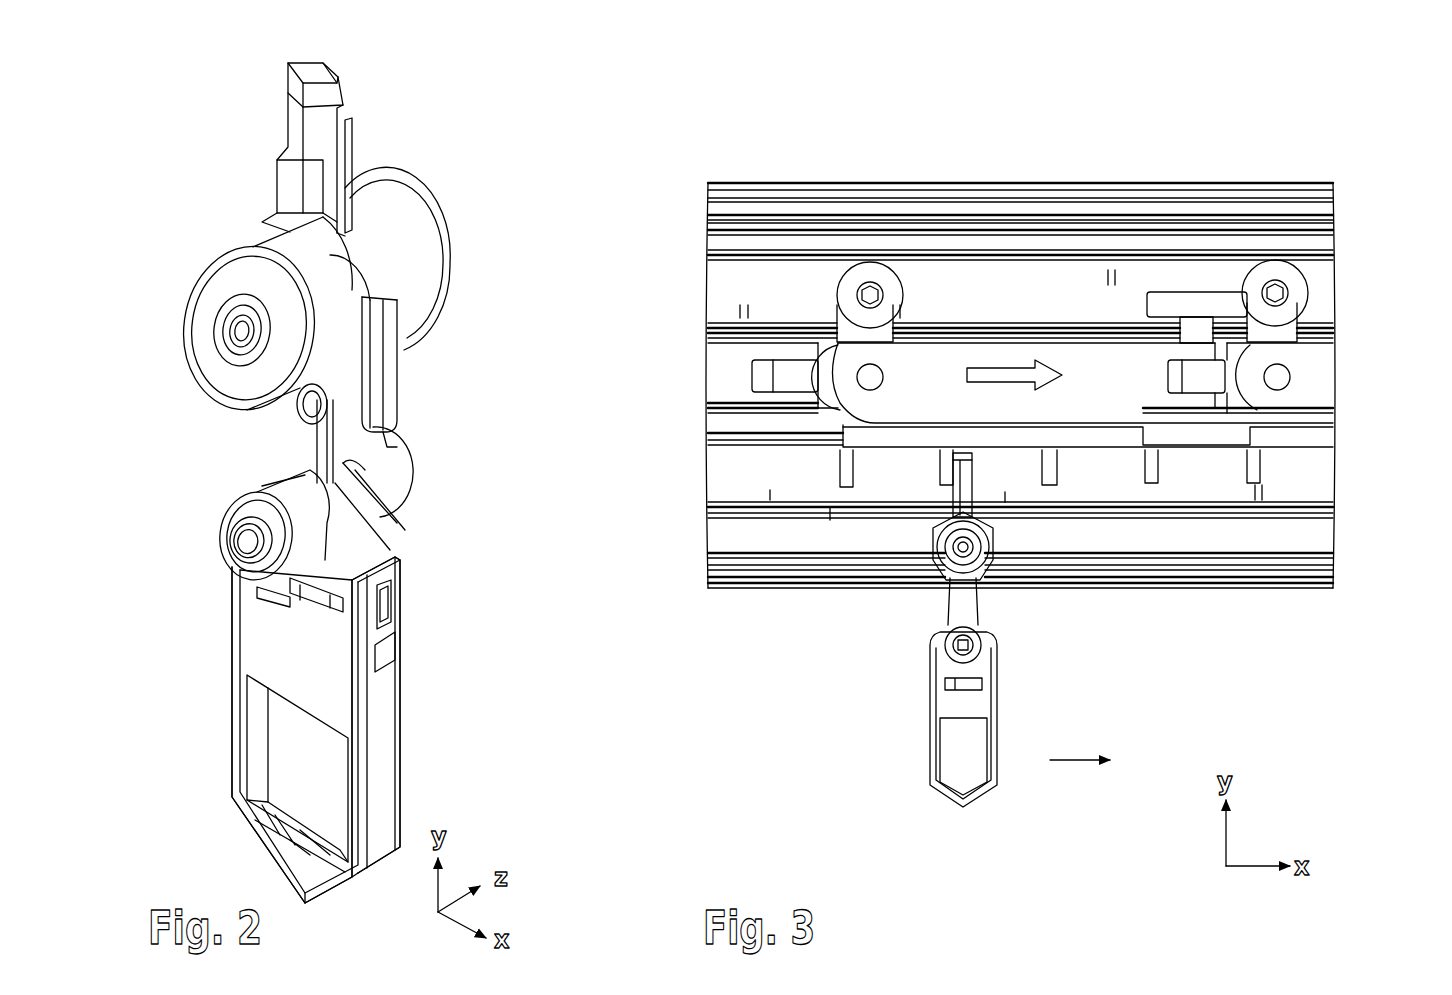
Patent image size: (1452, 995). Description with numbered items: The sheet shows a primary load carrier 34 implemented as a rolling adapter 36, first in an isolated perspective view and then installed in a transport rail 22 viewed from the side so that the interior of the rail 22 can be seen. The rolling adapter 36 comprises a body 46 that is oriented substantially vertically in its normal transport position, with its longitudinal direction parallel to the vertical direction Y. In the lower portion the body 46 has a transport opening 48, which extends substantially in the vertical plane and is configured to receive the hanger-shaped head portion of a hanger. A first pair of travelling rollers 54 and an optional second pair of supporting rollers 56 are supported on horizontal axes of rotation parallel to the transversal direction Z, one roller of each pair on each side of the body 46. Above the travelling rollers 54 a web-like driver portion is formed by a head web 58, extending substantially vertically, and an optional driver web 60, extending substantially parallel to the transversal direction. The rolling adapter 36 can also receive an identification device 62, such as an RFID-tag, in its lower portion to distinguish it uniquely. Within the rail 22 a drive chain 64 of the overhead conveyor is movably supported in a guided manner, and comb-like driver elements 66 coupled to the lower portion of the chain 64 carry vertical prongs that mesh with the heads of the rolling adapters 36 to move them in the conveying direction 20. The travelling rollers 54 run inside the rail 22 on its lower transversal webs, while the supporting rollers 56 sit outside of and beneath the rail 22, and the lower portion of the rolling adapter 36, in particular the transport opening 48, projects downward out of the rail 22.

In FIG. 3, the conveying direction 20 is at (1065, 762).
In FIG. 3, the transport rail 22 is at (1088, 182).
In FIG. 2, the primary load carrier 34 is at (217, 142).
In FIG. 2, the rolling adapter 36 is at (217, 142).
In FIG. 2, the body 46 is at (311, 697).
In FIG. 2, the transport opening 48 is at (311, 785).
In FIG. 3, the transport opening 48 is at (945, 760).
In FIG. 2, the travelling rollers 54 is at (432, 284).
In FIG. 3, the travelling rollers 54 is at (983, 560).
In FIG. 2, the supporting rollers 56 is at (405, 490).
In FIG. 3, the supporting rollers 56 is at (985, 648).
In FIG. 2, the head web 58 is at (330, 121).
In FIG. 3, the head web 58 is at (962, 485).
In FIG. 2, the driver web 60 is at (307, 177).
In FIG. 2, the identification device 62 is at (383, 627).
In FIG. 3, the drive chain 64 is at (1340, 393).
In FIG. 3, the driver elements 66 is at (1100, 458).